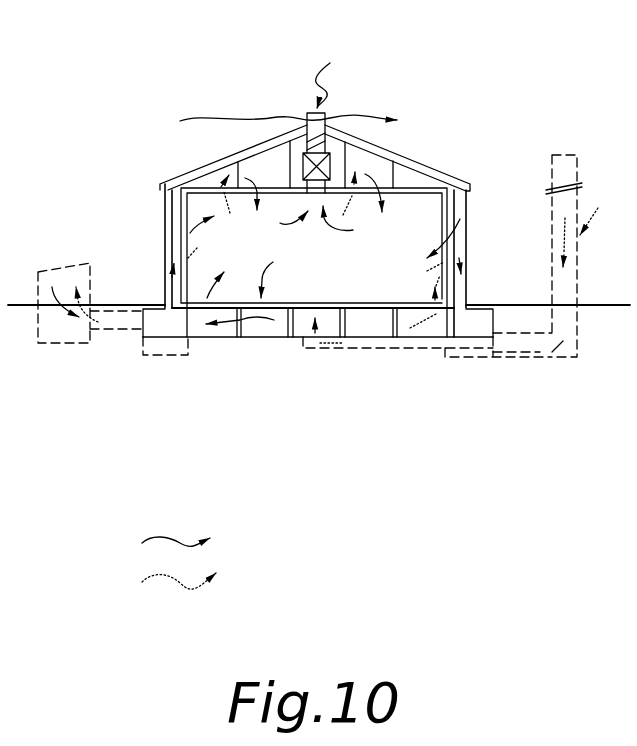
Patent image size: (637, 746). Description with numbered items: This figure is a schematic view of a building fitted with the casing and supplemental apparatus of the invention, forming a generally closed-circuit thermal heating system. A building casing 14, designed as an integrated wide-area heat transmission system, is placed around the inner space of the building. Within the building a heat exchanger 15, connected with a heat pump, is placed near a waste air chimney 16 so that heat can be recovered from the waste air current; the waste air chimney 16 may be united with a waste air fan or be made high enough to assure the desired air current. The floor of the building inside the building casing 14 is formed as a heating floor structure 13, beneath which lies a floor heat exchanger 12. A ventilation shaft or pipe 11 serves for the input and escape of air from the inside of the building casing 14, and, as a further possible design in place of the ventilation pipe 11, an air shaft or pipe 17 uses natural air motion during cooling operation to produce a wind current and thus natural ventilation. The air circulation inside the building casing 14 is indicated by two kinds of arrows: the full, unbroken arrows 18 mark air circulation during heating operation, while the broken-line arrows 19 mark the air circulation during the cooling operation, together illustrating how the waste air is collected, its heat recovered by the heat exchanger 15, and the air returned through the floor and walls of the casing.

The ventilation pipe 11 is at (65, 284).
The floor heat exchanger 12 is at (274, 323).
The heating floor structure 13 is at (365, 303).
The building casing 14 is at (173, 215).
The heat exchanger 15 is at (303, 154).
The waste air chimney 16 is at (316, 110).
The air shaft 17 is at (568, 322).
The warm air flow 18 is at (154, 543).
The cold air flow 19 is at (157, 577).